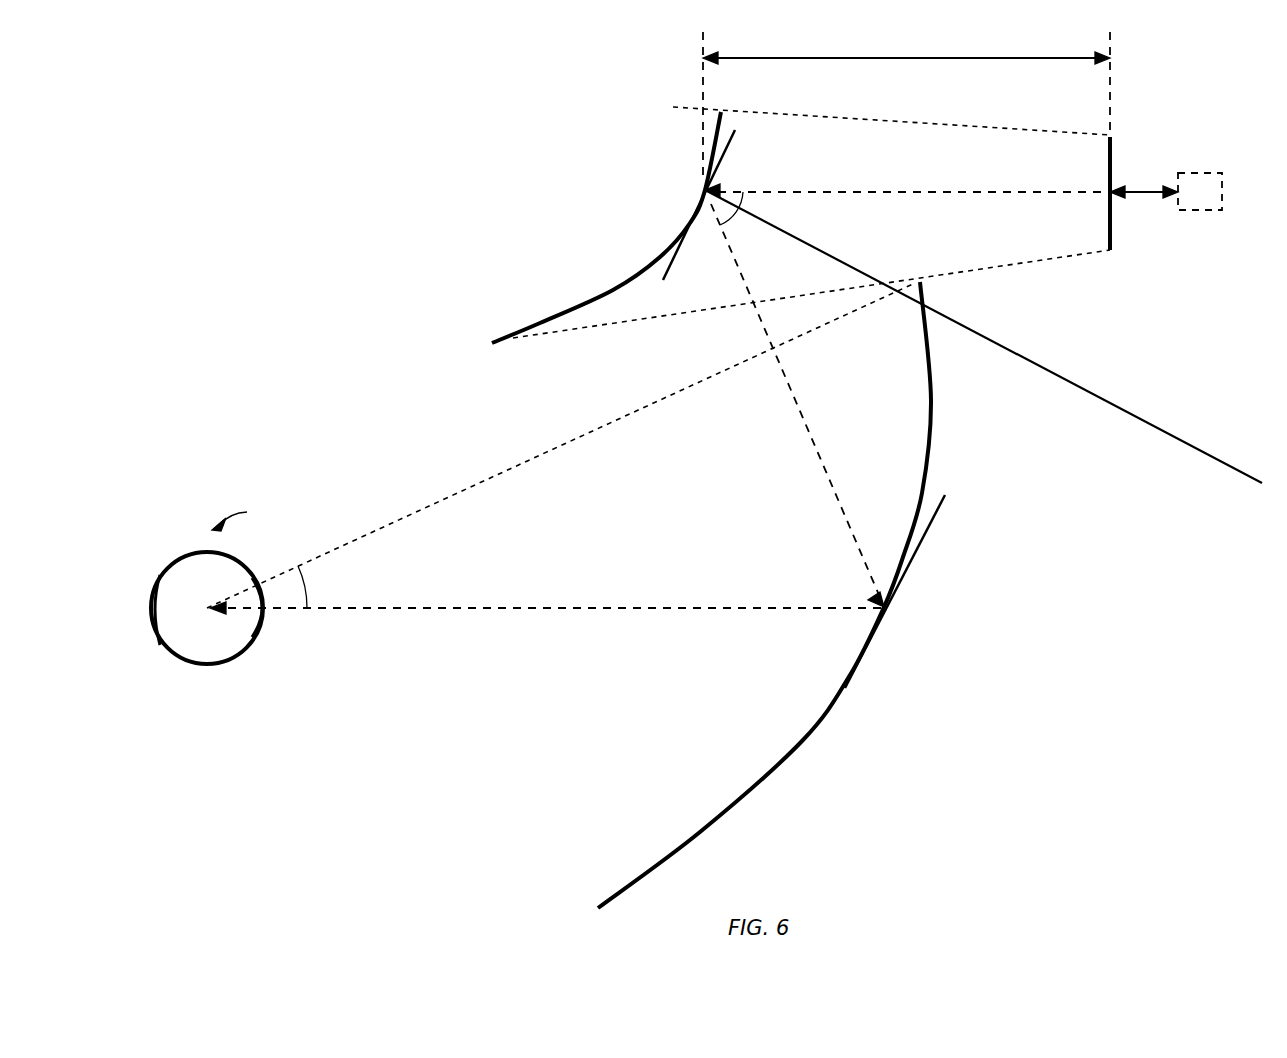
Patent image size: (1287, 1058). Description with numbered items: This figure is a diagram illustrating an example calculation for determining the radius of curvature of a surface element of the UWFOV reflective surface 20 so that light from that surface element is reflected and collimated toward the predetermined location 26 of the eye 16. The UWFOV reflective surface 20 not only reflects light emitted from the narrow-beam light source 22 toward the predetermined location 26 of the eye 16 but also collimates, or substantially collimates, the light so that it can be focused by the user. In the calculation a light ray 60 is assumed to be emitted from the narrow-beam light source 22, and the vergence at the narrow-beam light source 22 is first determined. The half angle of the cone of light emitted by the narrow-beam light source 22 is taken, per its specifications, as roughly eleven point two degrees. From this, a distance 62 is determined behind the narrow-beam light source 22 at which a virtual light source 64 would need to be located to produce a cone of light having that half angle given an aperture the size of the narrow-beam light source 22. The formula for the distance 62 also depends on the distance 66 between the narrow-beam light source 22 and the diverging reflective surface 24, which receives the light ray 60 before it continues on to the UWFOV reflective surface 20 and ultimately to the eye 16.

The eye 16 is at (185, 580).
The UWFOV reflective surface 20 is at (700, 832).
The narrow-beam light source 22 is at (1113, 232).
The diverging reflective surface 24 is at (712, 138).
The predetermined location 26 is at (247, 512).
The light ray 60 is at (858, 190).
The distance 62 is at (1142, 190).
The virtual light source 64 is at (1222, 188).
The distance 66 is at (922, 56).